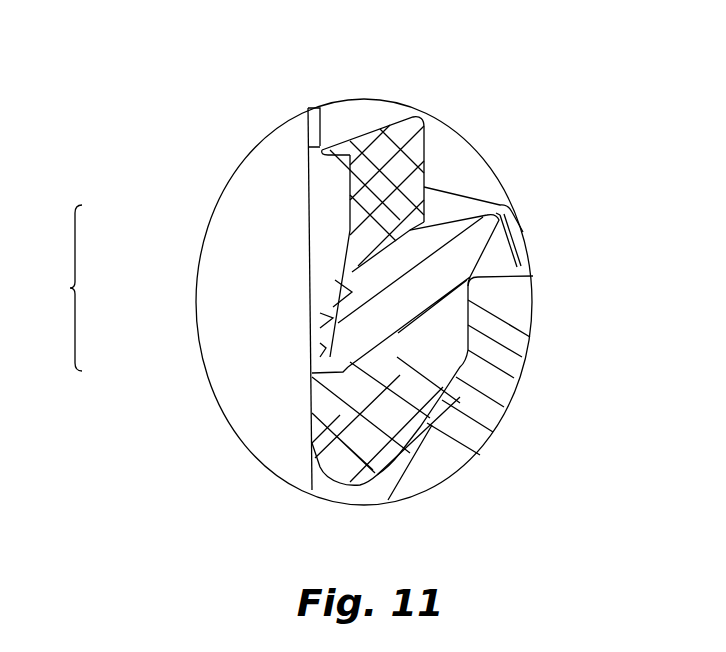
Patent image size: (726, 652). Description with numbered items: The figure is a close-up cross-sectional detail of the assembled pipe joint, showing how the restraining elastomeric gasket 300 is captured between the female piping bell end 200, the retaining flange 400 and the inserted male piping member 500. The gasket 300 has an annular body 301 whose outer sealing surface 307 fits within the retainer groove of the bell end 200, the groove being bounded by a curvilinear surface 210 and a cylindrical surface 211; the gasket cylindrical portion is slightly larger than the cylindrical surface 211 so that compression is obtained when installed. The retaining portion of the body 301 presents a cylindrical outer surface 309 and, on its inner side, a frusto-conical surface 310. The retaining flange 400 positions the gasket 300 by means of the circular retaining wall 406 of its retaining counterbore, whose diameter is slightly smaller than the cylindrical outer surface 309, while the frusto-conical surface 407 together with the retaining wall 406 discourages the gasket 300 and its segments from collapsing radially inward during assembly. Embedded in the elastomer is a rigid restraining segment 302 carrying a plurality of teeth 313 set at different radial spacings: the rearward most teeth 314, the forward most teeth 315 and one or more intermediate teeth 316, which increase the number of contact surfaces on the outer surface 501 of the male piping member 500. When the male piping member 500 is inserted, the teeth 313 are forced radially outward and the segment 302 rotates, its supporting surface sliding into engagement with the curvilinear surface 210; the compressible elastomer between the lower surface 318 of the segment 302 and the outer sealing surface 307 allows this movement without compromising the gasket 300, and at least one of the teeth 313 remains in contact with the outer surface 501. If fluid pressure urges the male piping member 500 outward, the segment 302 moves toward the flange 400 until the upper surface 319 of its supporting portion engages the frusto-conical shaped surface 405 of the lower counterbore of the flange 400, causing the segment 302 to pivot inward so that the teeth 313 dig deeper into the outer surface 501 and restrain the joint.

The female piping bell end 200 is at (533, 276).
The curvilinear surface 210 is at (486, 294).
The cylindrical surface 211 is at (480, 320).
The restraining elastomeric gasket 300 is at (343, 430).
The annular body 301 is at (386, 461).
The restraining segment 302 is at (480, 252).
The outer sealing surface 307 is at (441, 431).
The cylindrical outer surface 309 is at (434, 157).
The frusto-conical surface 310 is at (360, 134).
The teeth 313 is at (45, 288).
The rearward most teeth 314 is at (308, 372).
The forward most teeth 315 is at (330, 278).
The intermediate teeth 316 is at (316, 310).
The lower surface 318 is at (415, 341).
The upper surface 319 is at (436, 212).
The retaining flange 400 is at (471, 170).
The frusto-conical shaped surface 405 is at (495, 195).
The circular retaining wall 406 is at (432, 117).
The frusto-conical surface 407 is at (409, 111).
The male piping member 500 is at (258, 405).
The outer surface 501 is at (306, 197).